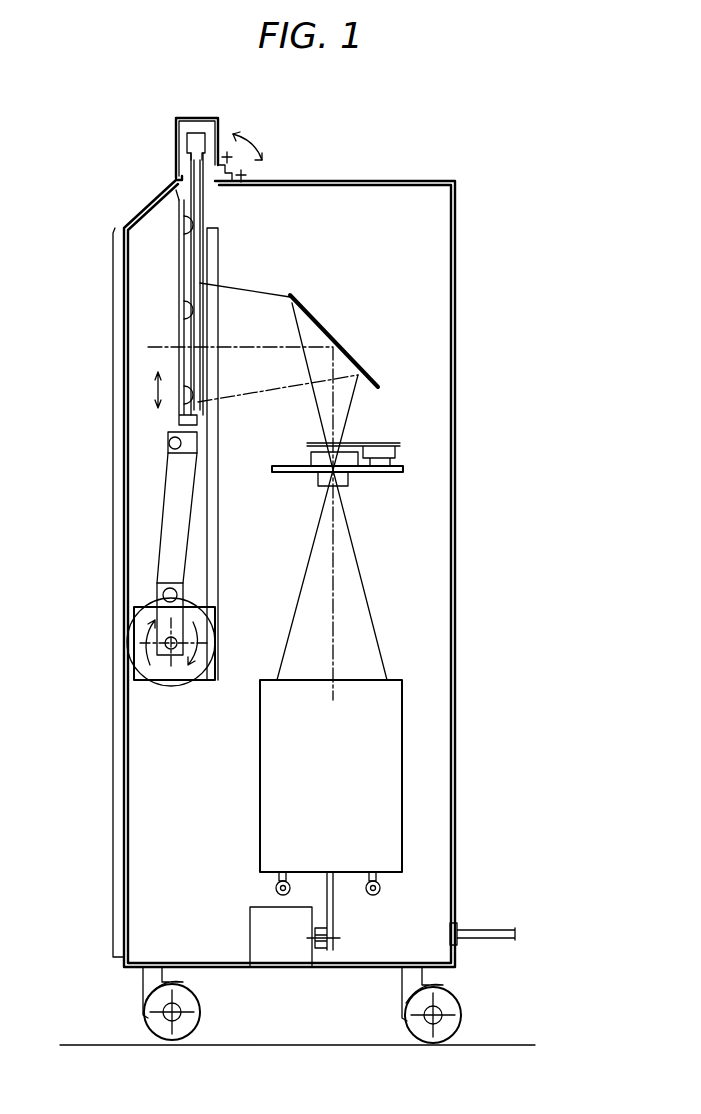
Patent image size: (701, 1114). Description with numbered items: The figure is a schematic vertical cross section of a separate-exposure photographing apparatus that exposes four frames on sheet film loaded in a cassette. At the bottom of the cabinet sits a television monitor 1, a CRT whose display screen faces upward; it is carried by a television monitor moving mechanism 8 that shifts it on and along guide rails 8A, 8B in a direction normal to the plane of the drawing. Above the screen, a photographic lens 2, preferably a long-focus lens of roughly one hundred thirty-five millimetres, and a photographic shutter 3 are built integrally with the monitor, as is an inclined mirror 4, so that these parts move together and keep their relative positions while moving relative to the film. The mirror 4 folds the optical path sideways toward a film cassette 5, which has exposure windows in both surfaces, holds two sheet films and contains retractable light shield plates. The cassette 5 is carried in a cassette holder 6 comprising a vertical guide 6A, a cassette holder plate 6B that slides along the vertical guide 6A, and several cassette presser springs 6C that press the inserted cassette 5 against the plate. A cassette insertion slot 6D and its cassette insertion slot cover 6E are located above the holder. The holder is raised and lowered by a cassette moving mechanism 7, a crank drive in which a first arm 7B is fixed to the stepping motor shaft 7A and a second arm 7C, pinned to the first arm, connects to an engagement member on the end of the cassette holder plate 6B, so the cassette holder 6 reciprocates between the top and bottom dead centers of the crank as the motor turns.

The television monitor 1 is at (385, 807).
The photographic lens 2 is at (345, 460).
The photographic shutter 3 is at (383, 452).
The mirror 4 is at (318, 322).
The film cassette 5 is at (193, 265).
The cassette holder 6 is at (248, 284).
The vertical guide 6A is at (208, 327).
The cassette holder plate 6B is at (203, 272).
The cassette presser springs 6C is at (181, 300).
The cassette insertion slot 6D is at (190, 176).
The cassette insertion slot cover 6E is at (176, 130).
The cassette moving mechanism 7 is at (133, 567).
The shaft of the stepping motor 7A is at (160, 655).
The first arm 7B is at (172, 620).
The second arm 7C is at (172, 549).
The television monitor moving mechanism 8 is at (356, 942).
The guide rail 8A is at (275, 888).
The guide rail 8B is at (381, 890).